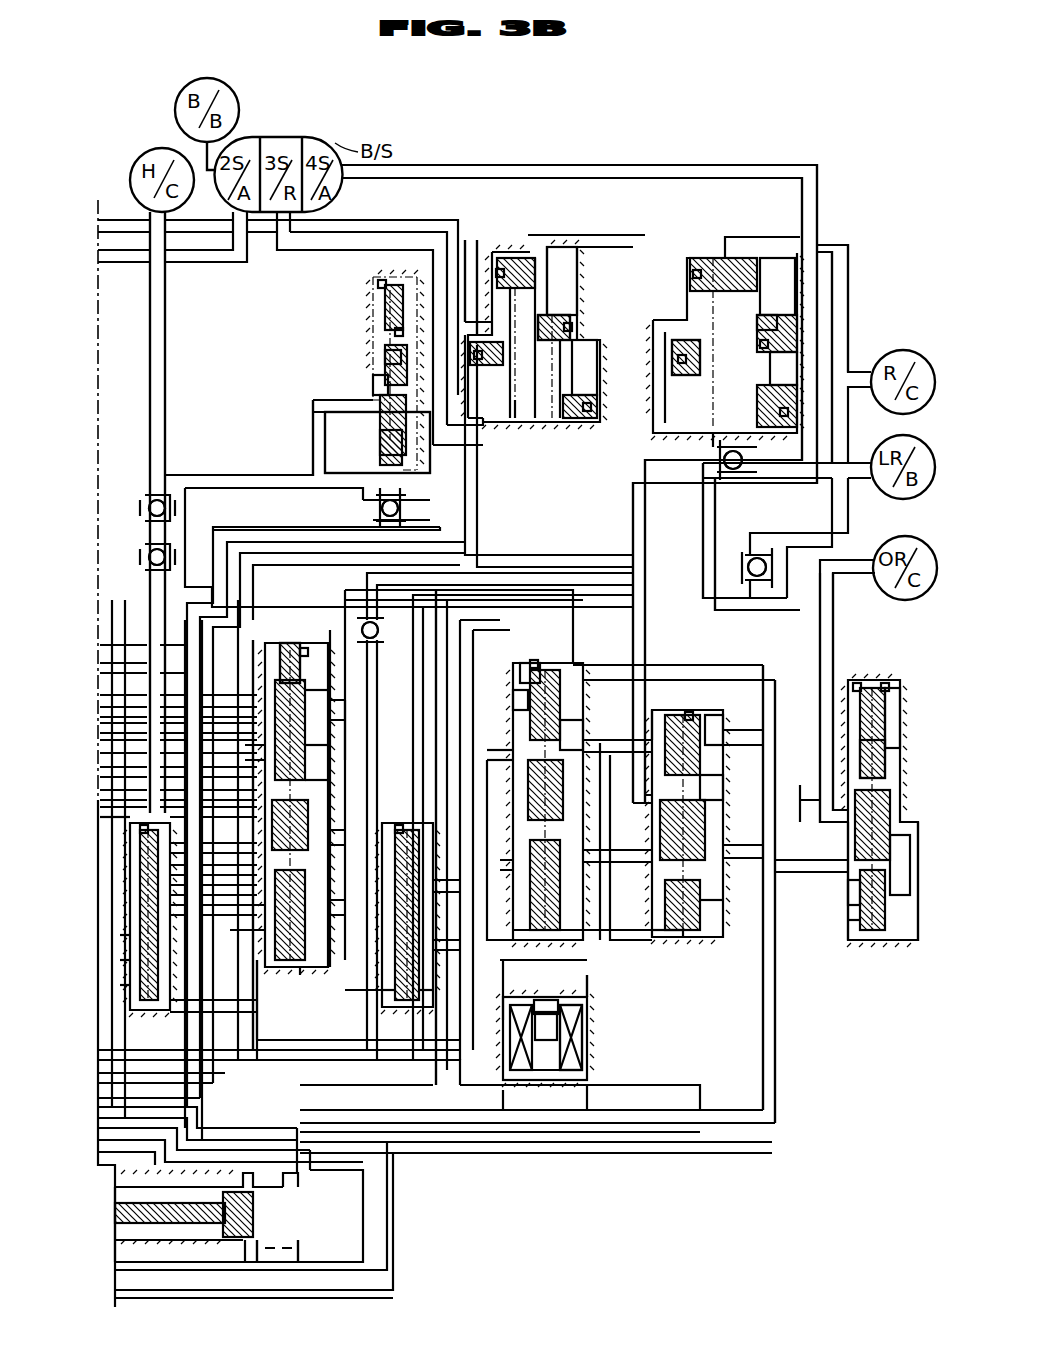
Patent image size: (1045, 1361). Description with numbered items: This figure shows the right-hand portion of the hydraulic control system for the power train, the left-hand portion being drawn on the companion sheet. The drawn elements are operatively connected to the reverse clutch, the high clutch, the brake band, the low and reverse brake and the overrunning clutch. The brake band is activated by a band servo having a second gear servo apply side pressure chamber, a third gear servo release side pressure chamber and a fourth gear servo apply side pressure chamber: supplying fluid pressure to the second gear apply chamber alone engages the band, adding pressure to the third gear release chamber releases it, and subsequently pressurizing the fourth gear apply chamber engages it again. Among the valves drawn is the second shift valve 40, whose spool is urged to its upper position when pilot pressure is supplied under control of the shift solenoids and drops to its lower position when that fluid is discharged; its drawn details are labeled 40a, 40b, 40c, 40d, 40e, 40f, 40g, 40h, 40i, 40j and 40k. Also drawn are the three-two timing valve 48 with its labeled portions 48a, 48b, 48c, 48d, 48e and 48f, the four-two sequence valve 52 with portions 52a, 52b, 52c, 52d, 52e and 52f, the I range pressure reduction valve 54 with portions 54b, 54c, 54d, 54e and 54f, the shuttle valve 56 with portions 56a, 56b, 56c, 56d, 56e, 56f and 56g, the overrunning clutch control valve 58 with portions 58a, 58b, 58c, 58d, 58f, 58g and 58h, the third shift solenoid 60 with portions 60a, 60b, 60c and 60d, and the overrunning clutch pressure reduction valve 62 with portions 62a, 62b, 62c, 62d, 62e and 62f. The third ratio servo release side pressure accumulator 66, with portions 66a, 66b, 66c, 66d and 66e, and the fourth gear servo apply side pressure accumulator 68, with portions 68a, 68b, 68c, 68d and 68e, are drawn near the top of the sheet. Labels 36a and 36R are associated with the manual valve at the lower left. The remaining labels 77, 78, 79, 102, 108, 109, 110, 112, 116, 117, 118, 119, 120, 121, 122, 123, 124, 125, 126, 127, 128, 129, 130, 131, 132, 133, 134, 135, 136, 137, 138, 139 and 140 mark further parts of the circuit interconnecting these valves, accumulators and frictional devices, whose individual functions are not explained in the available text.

The manual valve spool 36a is at (253, 1215).
The manual valve reverse port 36R is at (278, 1240).
The second shift valve 40 is at (296, 967).
The valve land 40a is at (290, 645).
The valve port 40b is at (305, 655).
The valve port 40c is at (303, 968).
The valve port 40d is at (265, 720).
The valve port 40e is at (315, 752).
The valve port 40f is at (262, 775).
The valve port 40g is at (318, 790).
The valve port 40h is at (268, 830).
The valve port 40i is at (268, 872).
The valve port 40j is at (310, 700).
The valve port 40k is at (268, 805).
The 3-2 timing valve 48 is at (372, 318).
The spring chamber 48a is at (378, 282).
The valve land 48b is at (395, 332).
The valve port 48c is at (385, 357).
The valve port 48d is at (373, 385).
The valve port 48e is at (380, 455).
The valve port 48f is at (350, 404).
The 4-2 sequence valve 52 is at (125, 920).
The spring chamber 52a is at (148, 830).
The valve port 52b is at (130, 985).
The valve port 52c is at (128, 937).
The valve port 52d is at (128, 962).
The valve port 52e is at (130, 1010).
The valve port 52f is at (250, 908).
The I range pressure reduction valve 54 is at (392, 823).
The valve port 54b is at (255, 848).
The valve port 54c is at (333, 1062).
The valve port 54d is at (425, 995).
The valve port 54e is at (255, 890).
The valve port 54f is at (397, 1008).
The shuttle valve 56 is at (542, 663).
The spring chamber 56a is at (586, 654).
The valve port 56b is at (530, 705).
The valve port 56c is at (530, 932).
The valve port 56d is at (572, 745).
The valve port 56e is at (500, 753).
The valve port 56f is at (500, 762).
The valve land 56g is at (520, 668).
The overrunning clutch control valve 58 is at (668, 710).
The spring chamber 58a is at (690, 712).
The valve port 58b is at (715, 735).
The valve port 58c is at (690, 940).
The valve port 58d is at (655, 705).
The valve port 58f is at (705, 900).
The valve port 58g is at (662, 938).
The valve port 58h is at (715, 780).
The third shift solenoid 60 is at (652, 1005).
The solenoid coil 60a is at (585, 1040).
The solenoid port 60b is at (550, 1078).
The solenoid plunger 60c is at (560, 1010).
The solenoid port 60d is at (548, 1012).
The overrunning clutch pressure reduction valve 62 is at (845, 940).
The spring chamber 62a is at (886, 735).
The valve land 62b is at (880, 775).
The valve port 62c is at (852, 922).
The valve port 62d is at (895, 850).
The valve port 62e is at (855, 885).
The valve port 62f is at (878, 940).
The third ratio servo release side pressure accumulator 66 is at (525, 250).
The valve land 66a is at (568, 318).
The valve port 66b is at (518, 420).
The valve chamber 66c is at (590, 365).
The valve chamber 66d is at (562, 275).
The valve port 66e is at (497, 420).
The fourth gear servo apply side pressure accumulator 68 is at (718, 252).
The valve land 68a is at (772, 322).
The valve port 68b is at (660, 418).
The valve chamber 68c is at (785, 365).
The valve chamber 68d is at (790, 276).
The valve port 68e is at (712, 397).
The line pressure passage 77 is at (165, 1272).
The passage 78 is at (432, 215).
The passage 79 is at (465, 1156).
The passage 102 is at (217, 1098).
The passage 108 is at (360, 992).
The passage 109 is at (580, 997).
The passage 110 is at (497, 990).
The passage 112 is at (460, 1085).
The passage 116 is at (698, 1110).
The passage 117 is at (255, 975).
The passage 118 is at (150, 412).
The check valve 119 is at (148, 505).
The check valve 120 is at (148, 553).
The passage 121 is at (468, 245).
The check valve 122 is at (380, 512).
The passage 123 is at (325, 425).
The passage 124 is at (248, 530).
The passage 125 is at (125, 668).
The passage 126 is at (255, 625).
The check valve 127 is at (362, 620).
The passage 128 is at (850, 252).
The check valve 129 is at (787, 572).
The passage 130 is at (715, 517).
The passage 131 is at (350, 714).
The passage 132 is at (335, 1040).
The passage 133 is at (440, 700).
The passage 134 is at (588, 765).
The passage 135 is at (640, 165).
The check valve 136 is at (765, 455).
The passage 137 is at (805, 870).
The passage 138 is at (836, 658).
The passage 139 is at (792, 784).
The passage 140 is at (748, 662).